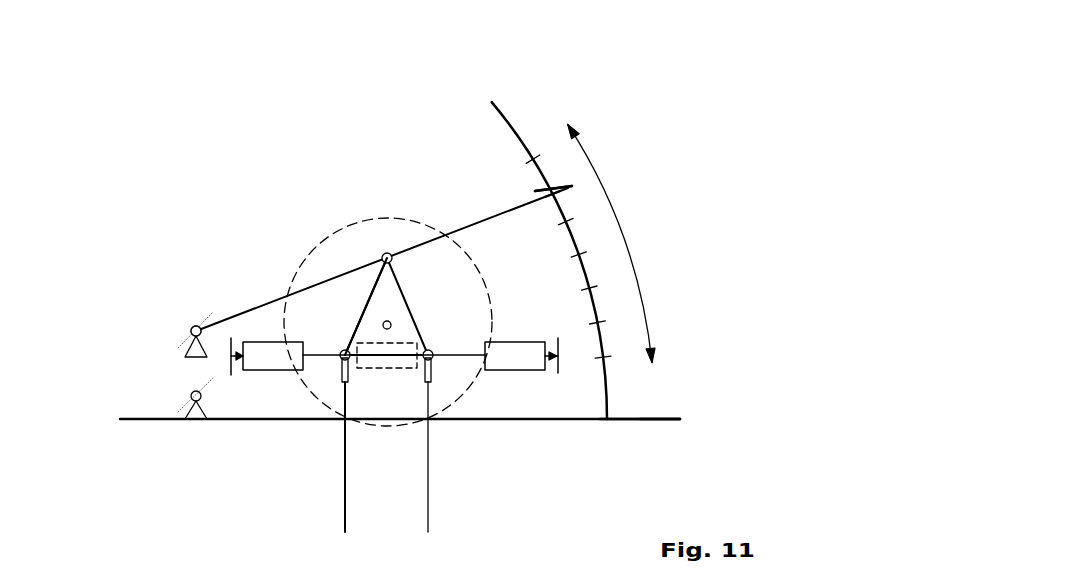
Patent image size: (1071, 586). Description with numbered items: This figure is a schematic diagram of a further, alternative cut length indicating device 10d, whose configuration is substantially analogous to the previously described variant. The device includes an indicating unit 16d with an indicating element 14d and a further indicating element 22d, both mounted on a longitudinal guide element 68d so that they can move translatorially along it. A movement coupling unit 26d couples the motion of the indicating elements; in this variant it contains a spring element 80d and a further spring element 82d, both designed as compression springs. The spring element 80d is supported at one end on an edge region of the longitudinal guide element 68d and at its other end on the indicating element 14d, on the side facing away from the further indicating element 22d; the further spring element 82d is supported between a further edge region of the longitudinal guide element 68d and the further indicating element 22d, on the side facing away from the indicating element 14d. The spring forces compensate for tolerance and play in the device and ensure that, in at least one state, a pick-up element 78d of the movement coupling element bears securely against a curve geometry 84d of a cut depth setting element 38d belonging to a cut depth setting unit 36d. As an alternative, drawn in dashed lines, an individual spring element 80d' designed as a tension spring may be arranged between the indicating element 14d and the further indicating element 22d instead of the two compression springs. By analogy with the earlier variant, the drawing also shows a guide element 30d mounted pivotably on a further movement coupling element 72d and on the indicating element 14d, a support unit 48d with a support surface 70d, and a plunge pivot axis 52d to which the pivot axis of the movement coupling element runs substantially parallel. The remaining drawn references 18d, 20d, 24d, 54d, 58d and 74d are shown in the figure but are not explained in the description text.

The cut length indicating device 10d is at (210, 210).
The indicating element 14d is at (432, 380).
The indicating unit 16d is at (525, 437).
The pivot region 18d is at (375, 218).
The guide rail 20d is at (430, 480).
The further indicating element 22d is at (343, 378).
The guide rail 24d is at (345, 483).
The movement coupling unit 26d is at (142, 330).
The guide element 30d is at (417, 322).
The cut depth setting unit 36d is at (578, 97).
The cut depth setting element 38d is at (560, 183).
The support unit 48d is at (667, 419).
The plunge pivot axis 52d is at (190, 394).
The lever arm 54d is at (365, 292).
The scale arc 58d is at (502, 117).
The longitudinal guide element 68d is at (462, 350).
The support surface 70d is at (640, 421).
The further movement coupling element 72d is at (493, 217).
The upper bearing 74d is at (190, 335).
The pick-up element 78d is at (567, 195).
The spring element 80d is at (521, 379).
The individual spring element 80d' is at (387, 381).
The further spring element 82d is at (272, 370).
The curve geometry 84d is at (572, 187).